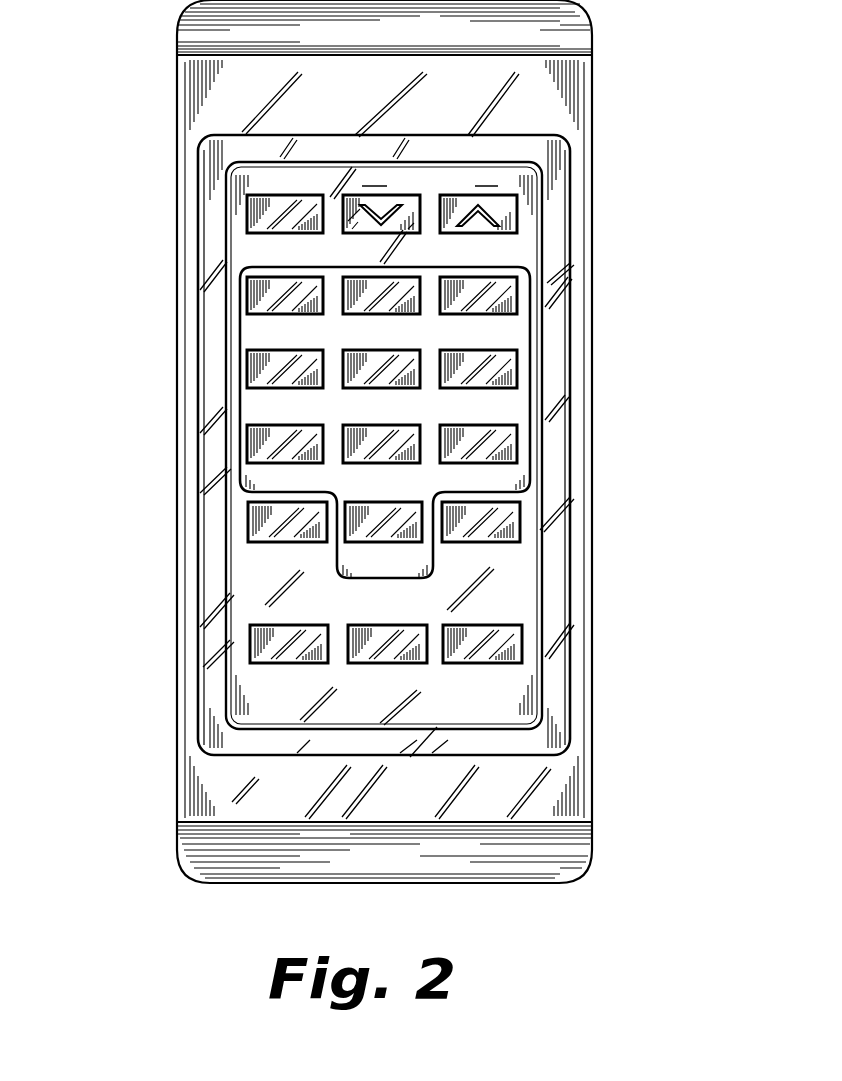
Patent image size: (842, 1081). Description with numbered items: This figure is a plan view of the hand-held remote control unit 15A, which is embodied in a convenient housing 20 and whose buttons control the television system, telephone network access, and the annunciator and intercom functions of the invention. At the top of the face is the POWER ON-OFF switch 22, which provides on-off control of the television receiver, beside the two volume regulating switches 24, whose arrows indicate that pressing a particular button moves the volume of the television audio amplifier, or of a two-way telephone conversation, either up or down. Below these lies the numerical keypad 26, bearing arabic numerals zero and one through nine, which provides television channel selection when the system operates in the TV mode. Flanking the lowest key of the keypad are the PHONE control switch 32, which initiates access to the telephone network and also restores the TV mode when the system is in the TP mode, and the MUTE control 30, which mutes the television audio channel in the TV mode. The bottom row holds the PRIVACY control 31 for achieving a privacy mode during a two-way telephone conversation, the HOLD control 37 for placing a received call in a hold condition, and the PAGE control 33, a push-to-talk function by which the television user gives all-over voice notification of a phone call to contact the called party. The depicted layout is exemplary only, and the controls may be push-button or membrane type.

The housing 20 is at (177, 400).
The POWER ON-OFF switch 22 is at (247, 213).
The remote control unit 15A is at (243, 247).
The volume regulating switches 24 is at (418, 233).
The numerical keypad 26 is at (510, 336).
The MUTE control 30 is at (520, 521).
The PHONE control switch 32 is at (248, 520).
The PRIVACY control 31 is at (250, 642).
The HOLD control 37 is at (380, 625).
The PAGE control 33 is at (522, 641).